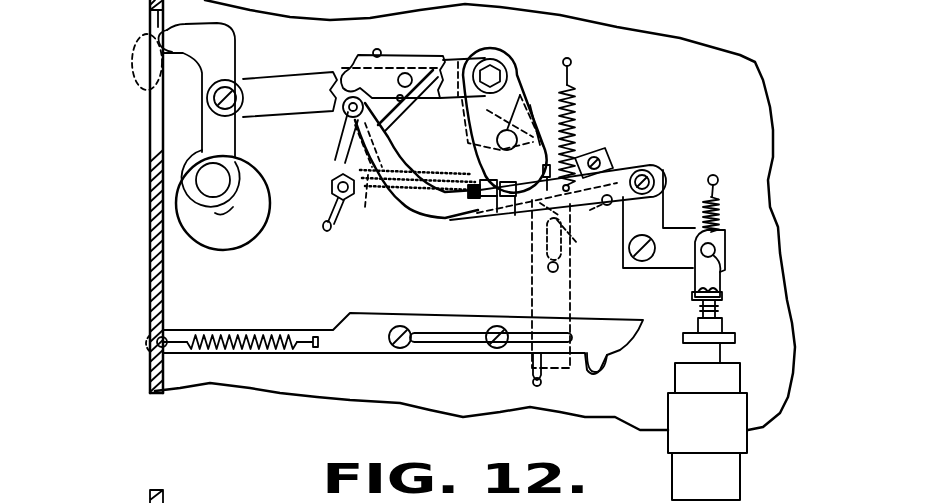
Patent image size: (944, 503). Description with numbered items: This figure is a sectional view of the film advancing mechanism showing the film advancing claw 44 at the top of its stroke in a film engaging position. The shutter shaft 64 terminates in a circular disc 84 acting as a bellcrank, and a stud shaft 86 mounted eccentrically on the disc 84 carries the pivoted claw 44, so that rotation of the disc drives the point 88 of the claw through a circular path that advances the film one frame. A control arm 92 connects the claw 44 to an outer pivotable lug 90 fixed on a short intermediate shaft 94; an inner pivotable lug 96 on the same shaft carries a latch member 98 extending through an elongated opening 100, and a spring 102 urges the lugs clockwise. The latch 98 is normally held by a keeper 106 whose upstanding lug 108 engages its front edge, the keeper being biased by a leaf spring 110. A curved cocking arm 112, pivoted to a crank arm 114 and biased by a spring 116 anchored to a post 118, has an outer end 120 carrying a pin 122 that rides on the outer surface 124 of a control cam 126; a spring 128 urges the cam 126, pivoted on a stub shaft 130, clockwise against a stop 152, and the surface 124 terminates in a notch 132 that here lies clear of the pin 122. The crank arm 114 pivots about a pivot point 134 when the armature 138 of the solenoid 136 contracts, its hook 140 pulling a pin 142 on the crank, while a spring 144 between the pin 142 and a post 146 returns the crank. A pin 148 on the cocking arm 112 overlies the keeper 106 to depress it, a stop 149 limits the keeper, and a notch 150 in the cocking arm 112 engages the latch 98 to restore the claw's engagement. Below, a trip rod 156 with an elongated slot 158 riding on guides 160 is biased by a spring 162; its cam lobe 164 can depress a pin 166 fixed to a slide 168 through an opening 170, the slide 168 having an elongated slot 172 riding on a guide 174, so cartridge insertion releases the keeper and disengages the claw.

The film advancing claw 44 is at (236, 42).
The shaft 64 is at (222, 214).
The circular disc 84 is at (232, 250).
The stud shaft 86 is at (222, 172).
The point 88 is at (152, 18).
The outer pivotable lug 90 is at (515, 75).
The control arm 92 is at (278, 80).
The intermediate shaft 94 is at (530, 100).
The inner pivotable lug 96 is at (472, 137).
The latch member 98 is at (497, 212).
The elongated opening 100 is at (504, 150).
The spring 102 is at (372, 193).
The keeper 106 is at (570, 240).
The upstanding lug 108 is at (490, 200).
The leaf spring 110 is at (607, 206).
The curved cocking arm 112 is at (418, 218).
The crank arm 114 is at (662, 188).
The spring 116 is at (570, 86).
The post 118 is at (571, 59).
The outer end 120 is at (341, 145).
The pin 122 is at (345, 114).
The outer surface 124 is at (332, 184).
The control cam 126 is at (398, 58).
The spring 128 is at (402, 110).
The stub shaft 130 is at (422, 62).
The notch 132 is at (350, 68).
The pivot point 134 is at (644, 262).
The solenoid 136 is at (743, 443).
The armature 138 is at (720, 324).
The hook 140 is at (722, 278).
The pin 142 is at (727, 238).
The spring 144 is at (721, 195).
The post 146 is at (716, 175).
The pin 148 is at (577, 125).
The stop 149 is at (463, 212).
The notch 150 is at (515, 215).
The stop 152 is at (378, 49).
The trip rod 156 is at (375, 312).
The elongated slot 158 is at (448, 343).
The guides 160 is at (398, 349).
The spring 162 is at (248, 330).
The cam lobe 164 is at (592, 366).
The pin 166 is at (532, 366).
The slide 168 is at (573, 303).
The opening 170 is at (541, 380).
The elongated slot 172 is at (563, 258).
The guide 174 is at (558, 272).